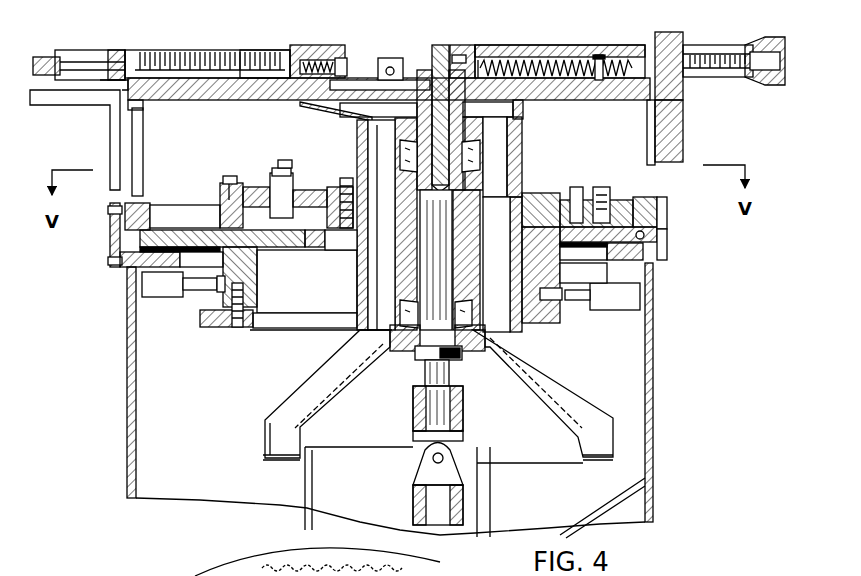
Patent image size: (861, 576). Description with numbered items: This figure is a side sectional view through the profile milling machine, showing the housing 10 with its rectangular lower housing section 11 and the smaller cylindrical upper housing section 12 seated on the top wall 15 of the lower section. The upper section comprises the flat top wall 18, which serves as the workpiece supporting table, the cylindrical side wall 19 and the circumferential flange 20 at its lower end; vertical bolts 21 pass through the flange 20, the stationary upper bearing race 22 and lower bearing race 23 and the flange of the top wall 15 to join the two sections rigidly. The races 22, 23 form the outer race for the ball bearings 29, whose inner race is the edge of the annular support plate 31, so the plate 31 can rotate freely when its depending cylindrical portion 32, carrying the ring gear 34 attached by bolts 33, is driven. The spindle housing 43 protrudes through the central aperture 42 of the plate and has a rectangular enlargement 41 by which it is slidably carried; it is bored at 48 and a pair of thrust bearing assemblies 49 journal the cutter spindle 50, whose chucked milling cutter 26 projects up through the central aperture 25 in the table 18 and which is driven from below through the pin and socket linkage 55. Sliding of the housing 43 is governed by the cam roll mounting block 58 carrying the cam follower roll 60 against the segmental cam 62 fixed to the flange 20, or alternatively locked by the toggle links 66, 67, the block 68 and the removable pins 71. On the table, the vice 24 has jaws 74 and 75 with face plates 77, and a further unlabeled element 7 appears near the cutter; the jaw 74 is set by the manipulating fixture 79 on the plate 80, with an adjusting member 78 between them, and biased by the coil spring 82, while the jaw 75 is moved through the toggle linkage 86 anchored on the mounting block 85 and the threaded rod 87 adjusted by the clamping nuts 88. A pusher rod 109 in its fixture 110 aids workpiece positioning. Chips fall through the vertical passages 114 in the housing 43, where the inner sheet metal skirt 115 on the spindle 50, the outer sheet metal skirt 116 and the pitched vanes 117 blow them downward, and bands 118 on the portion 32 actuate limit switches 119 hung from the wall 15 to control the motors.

The shaft housing block 7 is at (462, 53).
The housing 10 is at (712, 298).
The lower housing section 11 is at (654, 396).
The upper housing section 12 is at (677, 132).
The top wall 15 is at (636, 250).
The top wall 18 is at (145, 88).
The cylindrical side wall 19 is at (137, 132).
The circumferential flange 20 is at (650, 206).
The bolts 21 is at (118, 243).
The upper bearing race 22 is at (668, 229).
The lower bearing race 23 is at (668, 251).
The vice 24 is at (505, 38).
The central aperture 25 is at (365, 86).
The milling cutter 26 is at (440, 50).
The ball bearings 29 is at (112, 264).
The annular support plate 31 is at (163, 240).
The depending cylindrical portion 32 is at (250, 292).
The bolts 33 is at (237, 328).
The ring gear 34 is at (208, 328).
The rectangular enlargement 41 is at (520, 210).
The central aperture 42 is at (542, 212).
The spindle housing 43 is at (362, 300).
The central bore 48 is at (375, 210).
The thrust bearing assemblies 49 is at (474, 158).
The cutter spindle 50 is at (432, 252).
The pin and socket linkage 55 is at (452, 500).
The cam roll mounting block 58 is at (585, 198).
The cam follower roll 60 is at (608, 202).
The segmental cam 62 is at (667, 212).
The link 66 is at (310, 200).
The link 67 is at (263, 190).
The block 68 is at (222, 203).
The pins 71 is at (230, 180).
The jaw 74 is at (556, 52).
The jaw 75 is at (312, 50).
The face plate 77 is at (340, 60).
The screw 78 is at (700, 55).
The manipulating fixture 79 is at (757, 46).
The plate 80 is at (665, 45).
The coil spring 82 is at (593, 57).
The mounting block 85 is at (76, 100).
The toggle linkage 86 is at (68, 56).
The threaded rod 87 is at (252, 56).
The clamping nuts 88 is at (186, 55).
The pusher rod 109 is at (388, 66).
The fixture 110 is at (396, 66).
The vertical passages 114 is at (524, 165).
The inner sheet metal skirt 115 is at (305, 106).
The outer sheet metal skirt 116 is at (272, 420).
The vanes 117 is at (322, 394).
The bands 118 is at (226, 300).
The limit switches 119 is at (152, 290).